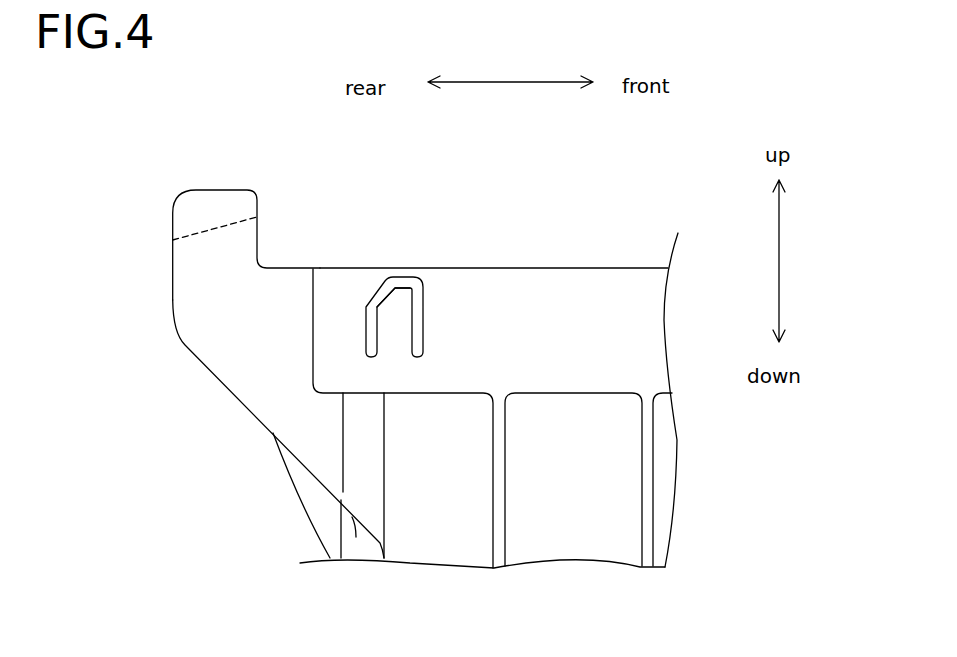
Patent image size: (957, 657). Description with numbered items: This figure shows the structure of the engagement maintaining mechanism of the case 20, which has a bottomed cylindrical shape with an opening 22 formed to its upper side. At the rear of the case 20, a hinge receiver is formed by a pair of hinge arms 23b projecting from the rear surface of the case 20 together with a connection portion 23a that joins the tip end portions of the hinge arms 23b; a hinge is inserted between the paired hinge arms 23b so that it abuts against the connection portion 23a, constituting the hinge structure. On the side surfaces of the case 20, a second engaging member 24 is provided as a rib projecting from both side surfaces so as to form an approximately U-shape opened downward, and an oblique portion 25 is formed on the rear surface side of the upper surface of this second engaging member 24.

The case 20 is at (414, 339).
The opening 22 is at (630, 269).
The connection portion 23a is at (215, 200).
The hinge arm 23b is at (200, 335).
The second engaging member 24 is at (417, 282).
The oblique portion 25 is at (380, 293).